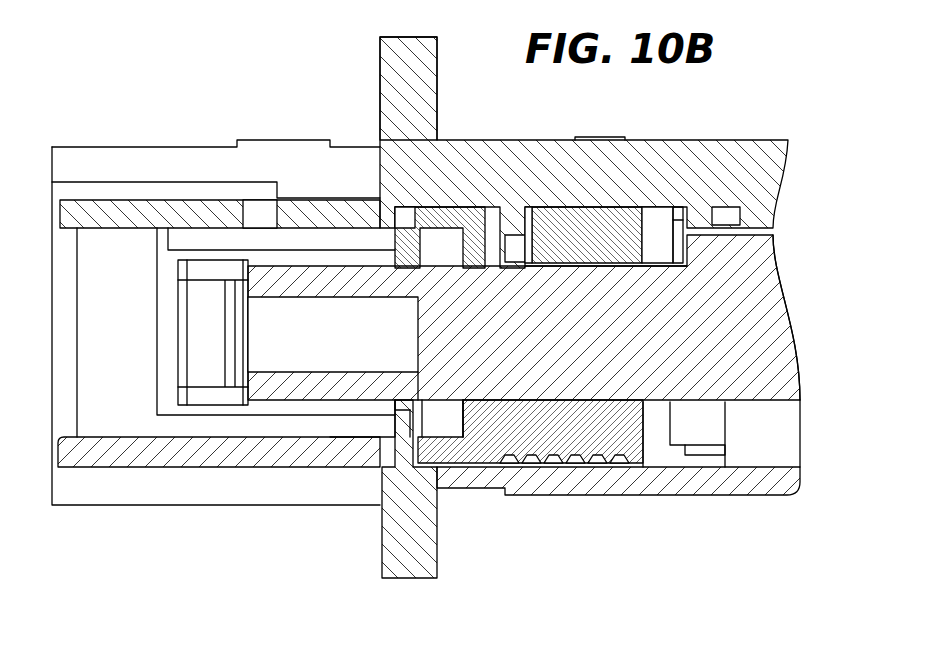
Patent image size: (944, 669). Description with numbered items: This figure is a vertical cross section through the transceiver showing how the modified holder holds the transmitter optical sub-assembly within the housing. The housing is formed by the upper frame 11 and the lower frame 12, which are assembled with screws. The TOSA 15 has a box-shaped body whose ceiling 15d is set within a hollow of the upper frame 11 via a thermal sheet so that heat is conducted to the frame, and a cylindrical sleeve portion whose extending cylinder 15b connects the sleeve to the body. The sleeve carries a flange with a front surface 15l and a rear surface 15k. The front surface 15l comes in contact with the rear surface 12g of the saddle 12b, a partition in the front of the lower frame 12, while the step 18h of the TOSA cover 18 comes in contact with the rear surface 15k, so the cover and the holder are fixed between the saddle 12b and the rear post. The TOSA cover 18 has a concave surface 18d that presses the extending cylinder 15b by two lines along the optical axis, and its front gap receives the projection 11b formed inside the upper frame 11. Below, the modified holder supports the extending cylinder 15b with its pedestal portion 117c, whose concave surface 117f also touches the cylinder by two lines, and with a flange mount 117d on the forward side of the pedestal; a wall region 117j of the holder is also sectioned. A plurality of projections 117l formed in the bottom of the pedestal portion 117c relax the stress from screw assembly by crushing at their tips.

The upper frame 11 is at (737, 153).
The projection 11b is at (500, 230).
The lower frame 12 is at (437, 556).
The saddle 12b is at (372, 445).
The rear surface of saddle 12g is at (418, 450).
The transmitter optical sub-assembly (TOSA) 15 is at (770, 320).
The extending cylinder 15b is at (635, 325).
The ceiling of body 15d is at (412, 400).
The front surface of flange 15l is at (403, 425).
The rear surface of flange 15k is at (466, 408).
The TOSA cover 18 is at (590, 218).
The concave surface 18d is at (583, 266).
The step 18h is at (455, 250).
The pedestal portion 117c is at (608, 445).
The flange mount 117d is at (455, 458).
The concave surface 117f is at (580, 400).
The nut inner wall portion 117j is at (435, 410).
The projections 117l is at (533, 465).